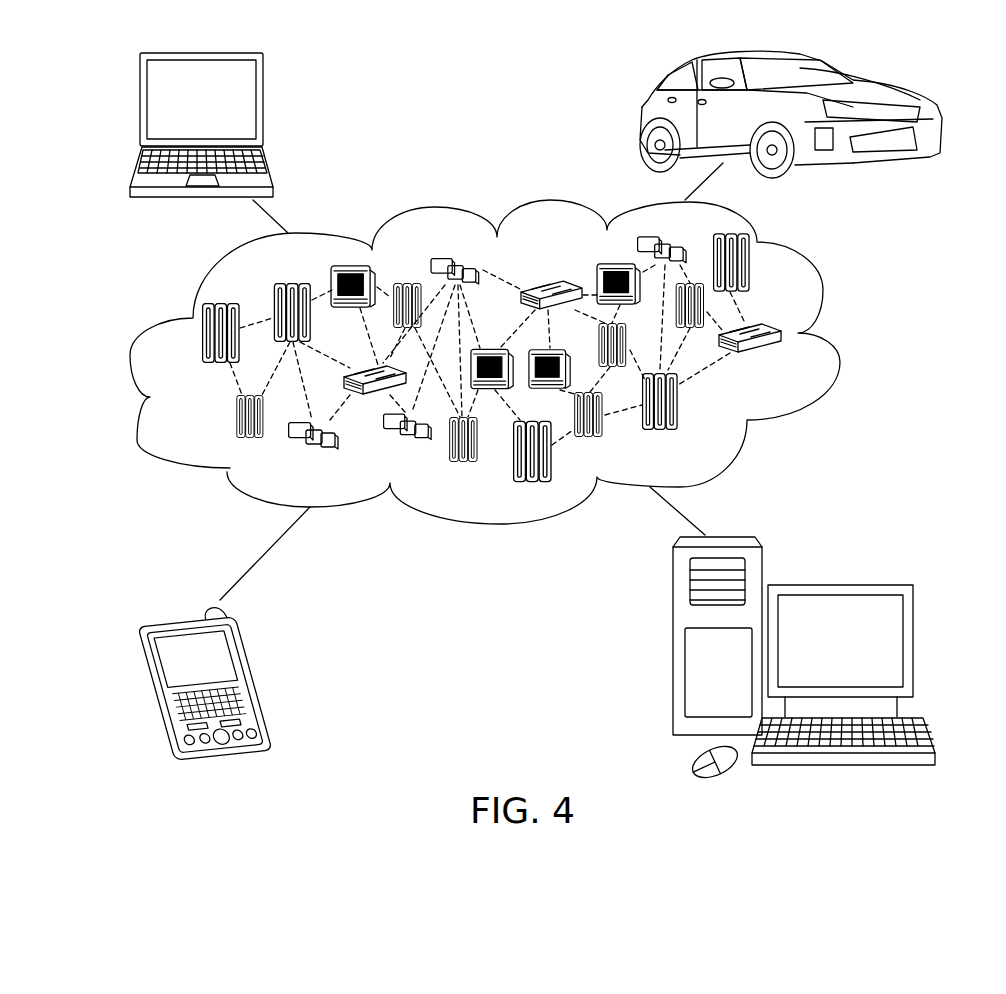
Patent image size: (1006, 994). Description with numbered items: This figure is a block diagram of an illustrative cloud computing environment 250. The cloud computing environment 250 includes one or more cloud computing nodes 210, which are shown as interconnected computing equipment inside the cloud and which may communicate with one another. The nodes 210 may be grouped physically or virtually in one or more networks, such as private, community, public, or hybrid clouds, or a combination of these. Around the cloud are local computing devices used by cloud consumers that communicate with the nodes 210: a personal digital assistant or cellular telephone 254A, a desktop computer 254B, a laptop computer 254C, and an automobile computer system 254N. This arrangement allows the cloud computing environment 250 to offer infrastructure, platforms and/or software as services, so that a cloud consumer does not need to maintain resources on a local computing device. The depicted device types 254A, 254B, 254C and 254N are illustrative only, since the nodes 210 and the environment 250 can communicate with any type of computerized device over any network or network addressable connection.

The laptop computer 254C is at (267, 105).
The automobile computer system 254N is at (637, 113).
The personal digital assistant (PDA) or cellular telephone 254A is at (260, 671).
The desktop computer 254B is at (837, 587).
The cloud computing environment 250 is at (830, 337).
The cloud computing nodes 210 is at (788, 364).